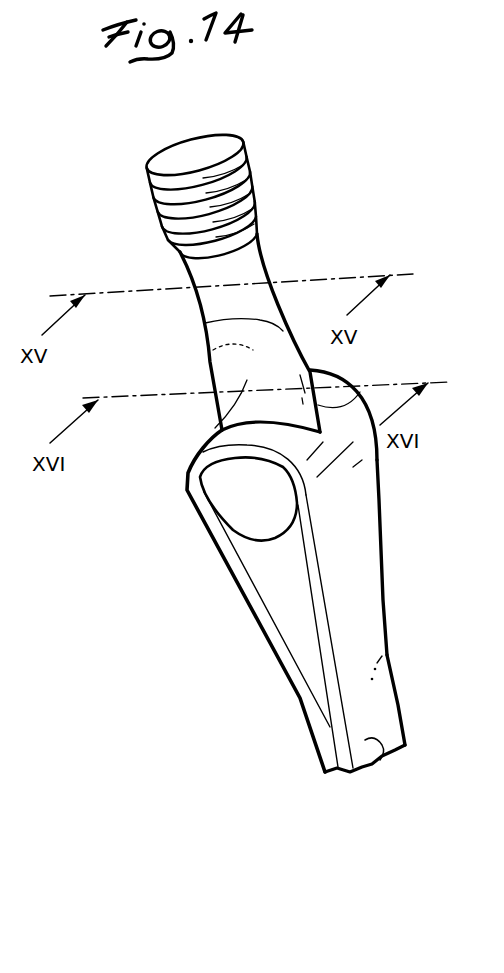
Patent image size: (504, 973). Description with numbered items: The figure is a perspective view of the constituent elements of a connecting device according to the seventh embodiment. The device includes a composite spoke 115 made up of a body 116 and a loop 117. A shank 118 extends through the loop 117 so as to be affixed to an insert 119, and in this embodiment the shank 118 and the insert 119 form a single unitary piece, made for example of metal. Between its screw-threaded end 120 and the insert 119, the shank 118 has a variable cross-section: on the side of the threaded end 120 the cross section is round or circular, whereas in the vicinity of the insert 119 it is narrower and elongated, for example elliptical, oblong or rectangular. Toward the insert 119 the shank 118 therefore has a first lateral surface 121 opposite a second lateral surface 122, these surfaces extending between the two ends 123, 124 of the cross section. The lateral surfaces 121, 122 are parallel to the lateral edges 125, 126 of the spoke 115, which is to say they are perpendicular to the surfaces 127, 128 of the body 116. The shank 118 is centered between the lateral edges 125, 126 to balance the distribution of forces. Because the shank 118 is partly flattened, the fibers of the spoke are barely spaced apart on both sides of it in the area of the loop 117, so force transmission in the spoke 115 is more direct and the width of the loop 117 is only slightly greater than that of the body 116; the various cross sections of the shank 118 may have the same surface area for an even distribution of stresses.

The composite spoke 115 is at (318, 762).
The body 116 is at (403, 720).
The loop 117 is at (381, 523).
The shank 118 is at (265, 258).
The insert 119 is at (237, 508).
The screw-threaded end 120 is at (250, 170).
The first lateral surface 121 is at (222, 425).
The second lateral surface 122 is at (201, 359).
The end 123 is at (215, 378).
The end 124 is at (354, 396).
The lateral edge 125 is at (337, 762).
The lateral edge 126 is at (392, 655).
The surface 127 is at (303, 742).
The surface 128 is at (388, 755).